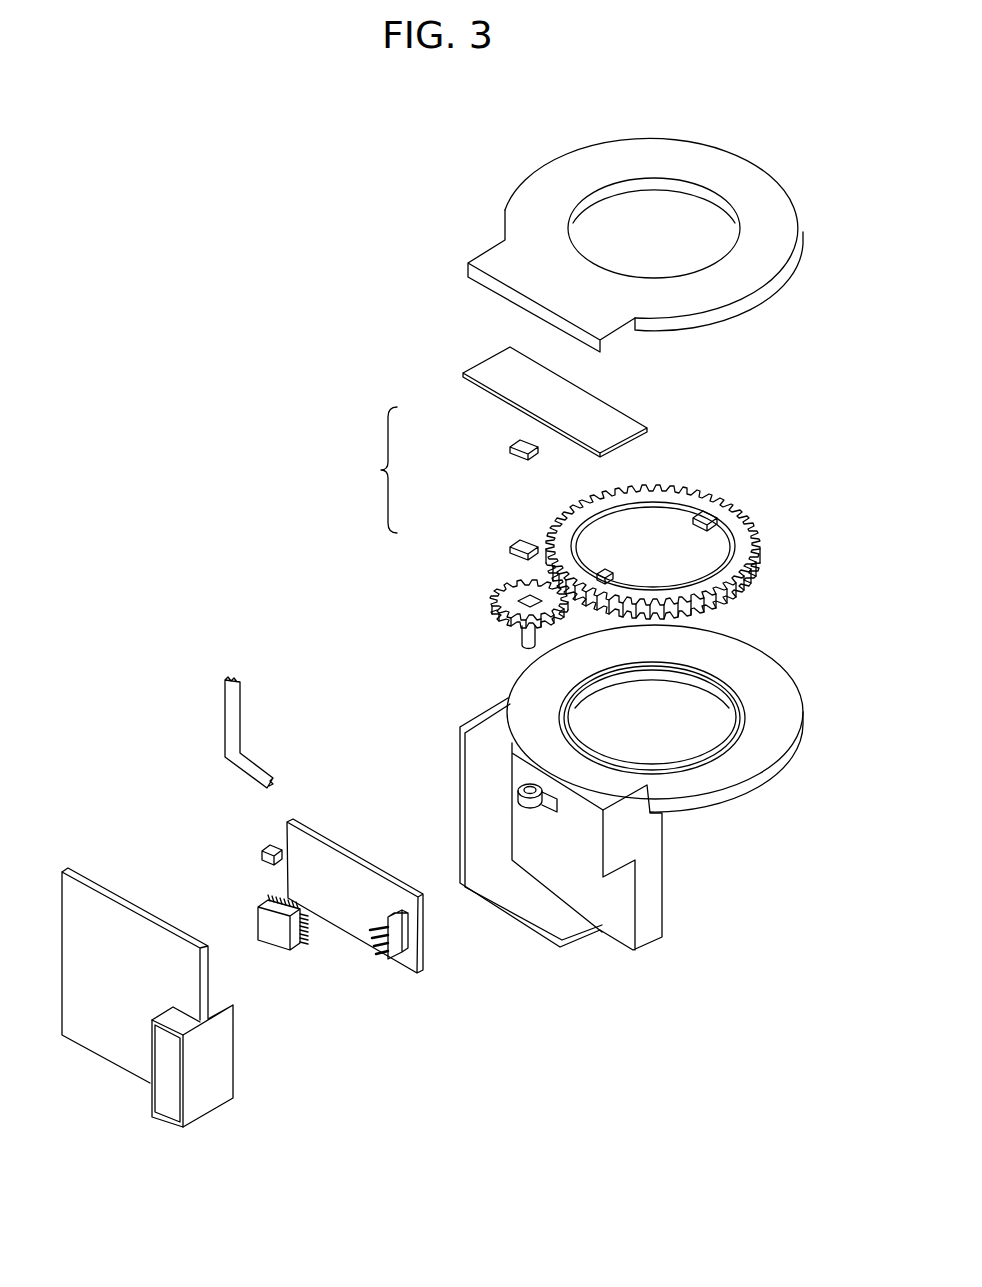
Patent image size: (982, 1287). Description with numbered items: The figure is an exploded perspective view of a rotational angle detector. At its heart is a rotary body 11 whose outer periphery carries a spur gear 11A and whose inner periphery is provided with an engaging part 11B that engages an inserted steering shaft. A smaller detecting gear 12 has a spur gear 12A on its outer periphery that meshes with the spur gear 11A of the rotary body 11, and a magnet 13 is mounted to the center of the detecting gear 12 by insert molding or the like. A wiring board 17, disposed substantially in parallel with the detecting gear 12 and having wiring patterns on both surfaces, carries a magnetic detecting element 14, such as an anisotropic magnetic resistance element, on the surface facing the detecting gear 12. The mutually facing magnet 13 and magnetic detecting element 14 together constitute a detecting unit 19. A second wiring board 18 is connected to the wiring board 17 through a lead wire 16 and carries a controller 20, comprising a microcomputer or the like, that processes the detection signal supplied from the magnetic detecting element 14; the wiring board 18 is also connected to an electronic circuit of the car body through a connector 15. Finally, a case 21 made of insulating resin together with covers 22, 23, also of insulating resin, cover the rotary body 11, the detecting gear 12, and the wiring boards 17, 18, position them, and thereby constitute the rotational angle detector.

The rotary body 11 is at (700, 490).
The spur gear 11A is at (745, 515).
The engaging part 11B is at (700, 524).
The detecting gear 12 is at (515, 612).
The spur gear 12A is at (490, 598).
The magnet 13 is at (512, 548).
The magnetic detecting element 14 is at (508, 445).
The connector 15 is at (382, 957).
The lead wire 16 is at (240, 720).
The wiring board 17 is at (612, 419).
The wiring board 18 is at (418, 953).
The detecting unit 19 is at (376, 484).
The controller 20 is at (258, 912).
The case 21 is at (710, 812).
The cover 22 is at (547, 170).
The cover 23 is at (105, 1063).